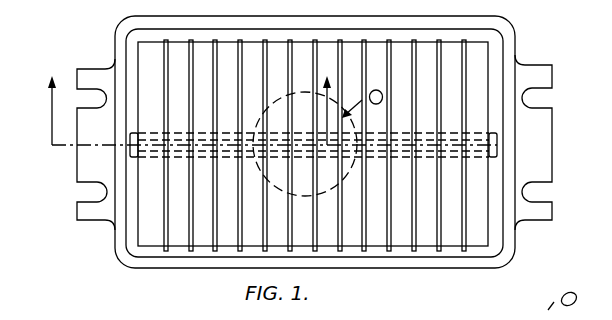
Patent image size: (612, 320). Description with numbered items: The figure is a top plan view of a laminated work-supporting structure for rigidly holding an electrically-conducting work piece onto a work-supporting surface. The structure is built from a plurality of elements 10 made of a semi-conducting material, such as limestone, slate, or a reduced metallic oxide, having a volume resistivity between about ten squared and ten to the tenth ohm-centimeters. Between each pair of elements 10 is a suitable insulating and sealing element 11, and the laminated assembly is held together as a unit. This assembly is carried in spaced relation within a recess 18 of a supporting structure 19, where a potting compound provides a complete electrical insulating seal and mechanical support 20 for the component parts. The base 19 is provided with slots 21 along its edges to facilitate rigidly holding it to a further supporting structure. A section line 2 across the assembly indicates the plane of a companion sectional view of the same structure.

The section line 2- 2 is at (262, 136).
The elements 10 is at (149, 227).
The insulating and sealing element 11 is at (267, 227).
The recess 18 is at (410, 258).
The supporting structure 19 is at (180, 266).
The mechanical support 20 is at (484, 252).
The slots 21 is at (84, 193).